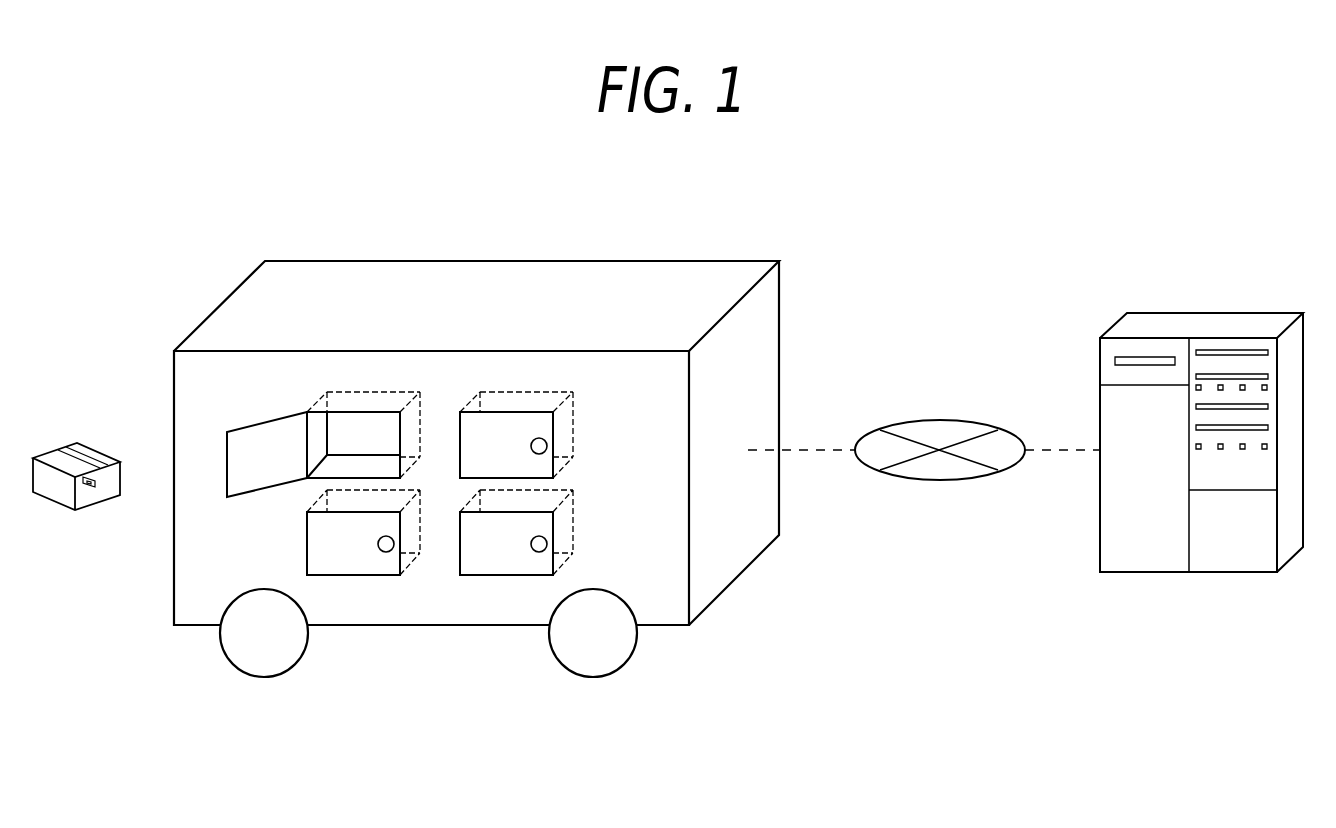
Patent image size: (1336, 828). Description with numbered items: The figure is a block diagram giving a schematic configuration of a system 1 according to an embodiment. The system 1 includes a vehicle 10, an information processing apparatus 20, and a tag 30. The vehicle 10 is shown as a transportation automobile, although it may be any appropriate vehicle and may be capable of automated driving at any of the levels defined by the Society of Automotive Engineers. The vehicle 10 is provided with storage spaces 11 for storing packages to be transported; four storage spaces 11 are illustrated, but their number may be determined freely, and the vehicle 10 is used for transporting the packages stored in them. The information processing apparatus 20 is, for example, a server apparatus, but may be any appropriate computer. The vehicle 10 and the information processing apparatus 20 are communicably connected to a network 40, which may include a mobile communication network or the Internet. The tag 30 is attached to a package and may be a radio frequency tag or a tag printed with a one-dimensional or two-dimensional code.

The system 1 is at (938, 643).
The vehicle 10 is at (575, 258).
The storage space 11 is at (358, 412).
The information processing apparatus 20 is at (1205, 313).
The tag 30 is at (90, 487).
The network 40 is at (938, 420).